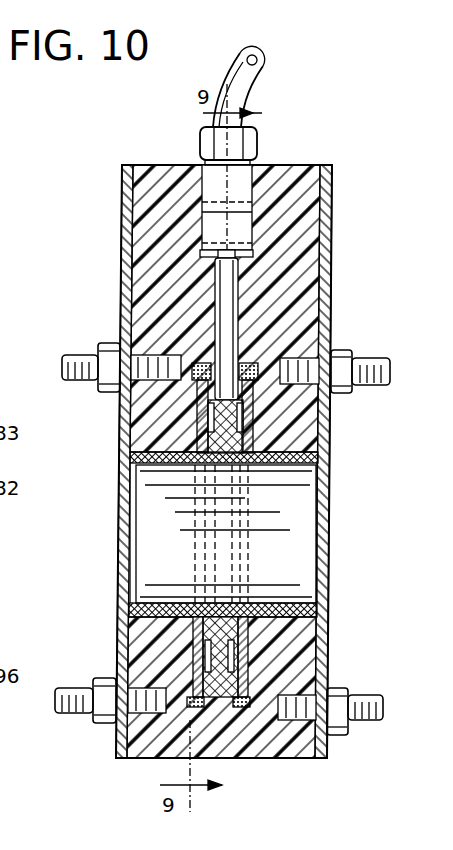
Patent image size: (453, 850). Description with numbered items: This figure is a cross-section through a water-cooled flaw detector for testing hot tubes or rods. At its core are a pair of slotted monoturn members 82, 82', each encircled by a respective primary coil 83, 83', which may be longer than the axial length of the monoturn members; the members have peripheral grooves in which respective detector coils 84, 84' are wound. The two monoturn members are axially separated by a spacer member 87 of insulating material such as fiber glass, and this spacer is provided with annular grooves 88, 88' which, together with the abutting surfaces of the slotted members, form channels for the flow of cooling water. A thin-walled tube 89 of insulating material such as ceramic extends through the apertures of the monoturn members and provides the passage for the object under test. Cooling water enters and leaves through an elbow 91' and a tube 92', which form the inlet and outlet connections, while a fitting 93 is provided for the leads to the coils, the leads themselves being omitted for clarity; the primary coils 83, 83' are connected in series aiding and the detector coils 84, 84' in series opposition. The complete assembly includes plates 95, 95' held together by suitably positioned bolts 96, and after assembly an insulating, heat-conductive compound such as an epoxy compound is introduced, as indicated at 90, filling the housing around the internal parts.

The insulating heat-conductive compound 90 is at (292, 236).
The plate 95 is at (101, 461).
The plate 95' is at (351, 461).
The bolts 96 is at (80, 362).
The elbow 91' is at (257, 157).
The fitting 93 is at (250, 86).
The tube 92' is at (257, 325).
The primary coil 83 is at (188, 383).
The primary coil 83' is at (264, 385).
The detector coil 84 is at (175, 385).
The detector coil 84' is at (271, 387).
The slotted monoturn member 82 is at (177, 417).
The slotted monoturn member 82' is at (270, 417).
The annular groove 88 is at (191, 426).
The annular groove 88' is at (276, 440).
The spacer member 87 is at (213, 447).
The thin-walled tube 89 is at (300, 465).